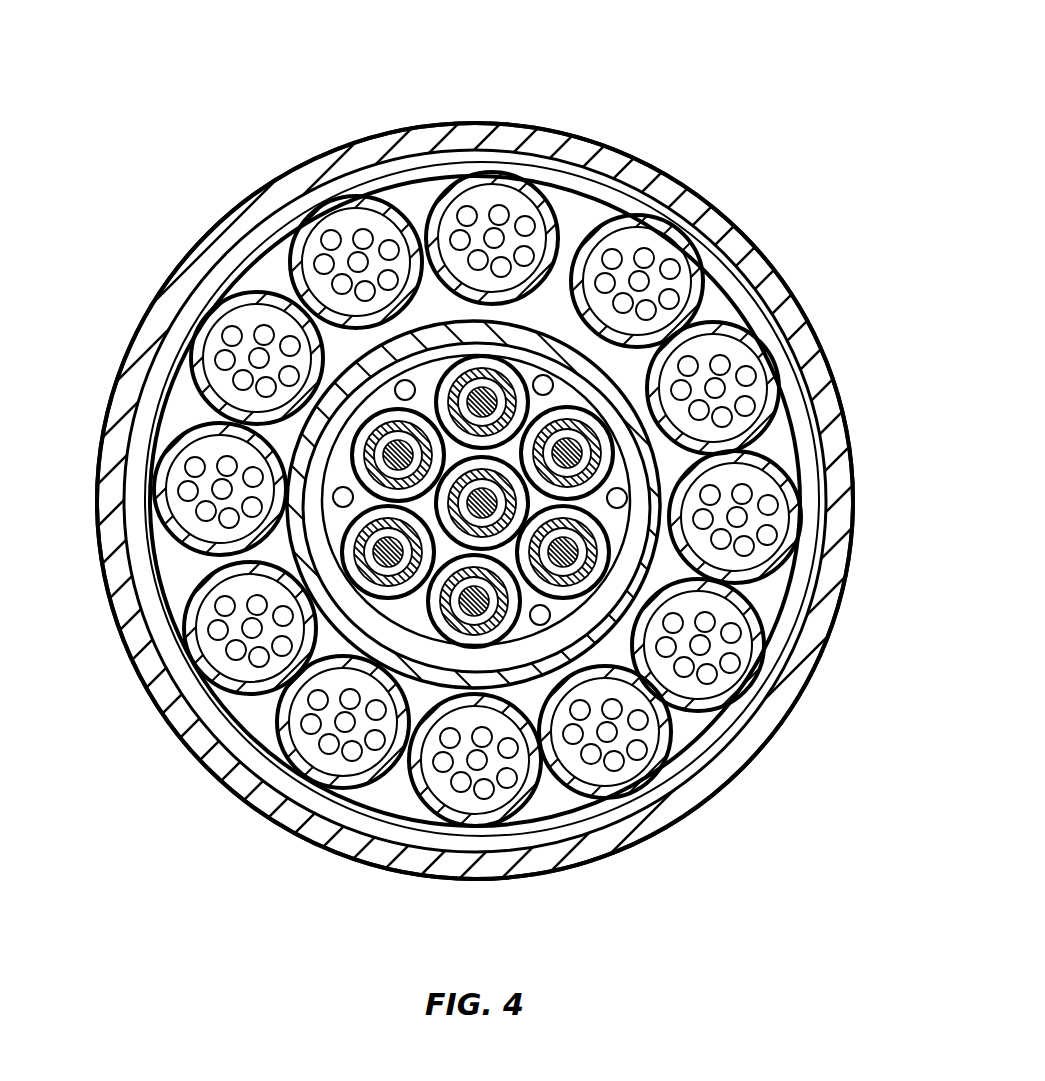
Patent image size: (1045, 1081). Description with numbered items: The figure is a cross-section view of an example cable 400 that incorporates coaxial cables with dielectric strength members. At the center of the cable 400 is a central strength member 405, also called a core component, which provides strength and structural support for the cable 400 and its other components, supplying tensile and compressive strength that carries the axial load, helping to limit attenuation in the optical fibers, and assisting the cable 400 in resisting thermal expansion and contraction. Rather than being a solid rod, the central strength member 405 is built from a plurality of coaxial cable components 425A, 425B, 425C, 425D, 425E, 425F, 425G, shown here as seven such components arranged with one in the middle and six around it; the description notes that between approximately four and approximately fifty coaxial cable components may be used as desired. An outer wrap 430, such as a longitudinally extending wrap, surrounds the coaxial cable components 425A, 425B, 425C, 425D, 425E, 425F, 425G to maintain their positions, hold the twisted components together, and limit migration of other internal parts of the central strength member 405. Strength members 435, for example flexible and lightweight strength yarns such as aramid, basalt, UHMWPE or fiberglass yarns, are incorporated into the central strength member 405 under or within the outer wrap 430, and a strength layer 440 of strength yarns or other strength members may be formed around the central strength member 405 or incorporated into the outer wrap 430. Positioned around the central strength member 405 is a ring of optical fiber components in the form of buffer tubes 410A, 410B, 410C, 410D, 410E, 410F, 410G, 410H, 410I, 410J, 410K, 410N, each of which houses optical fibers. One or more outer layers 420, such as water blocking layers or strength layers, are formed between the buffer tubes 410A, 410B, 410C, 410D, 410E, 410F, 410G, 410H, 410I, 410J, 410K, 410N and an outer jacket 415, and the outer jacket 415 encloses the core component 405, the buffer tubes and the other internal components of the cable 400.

The cable 400 is at (259, 74).
The central strength member 405 is at (636, 158).
The outer jacket 415 is at (506, 133).
The outer layers 420 is at (775, 308).
The outer wrap 430 is at (434, 328).
The strength members 435 is at (628, 494).
The strength layer 440 is at (633, 367).
The buffer tube 410A is at (700, 275).
The buffer tube 410B is at (789, 383).
The buffer tube 410C is at (800, 493).
The buffer tube 410D is at (762, 667).
The buffer tube 410E is at (673, 753).
The buffer tube 410F is at (447, 825).
The buffer tube 410G is at (277, 752).
The buffer tube 410H is at (173, 630).
The buffer tube 410I is at (170, 542).
The buffer tube 410J is at (192, 381).
The buffer tube 410K is at (359, 197).
The buffer tube 410N is at (534, 322).
The coaxial cable component 425A is at (432, 509).
The coaxial cable component 425B is at (362, 411).
The coaxial cable component 425C is at (428, 376).
The coaxial cable component 425D is at (550, 192).
The coaxial cable component 425E is at (580, 610).
The coaxial cable component 425F is at (420, 610).
The coaxial cable component 425G is at (335, 563).